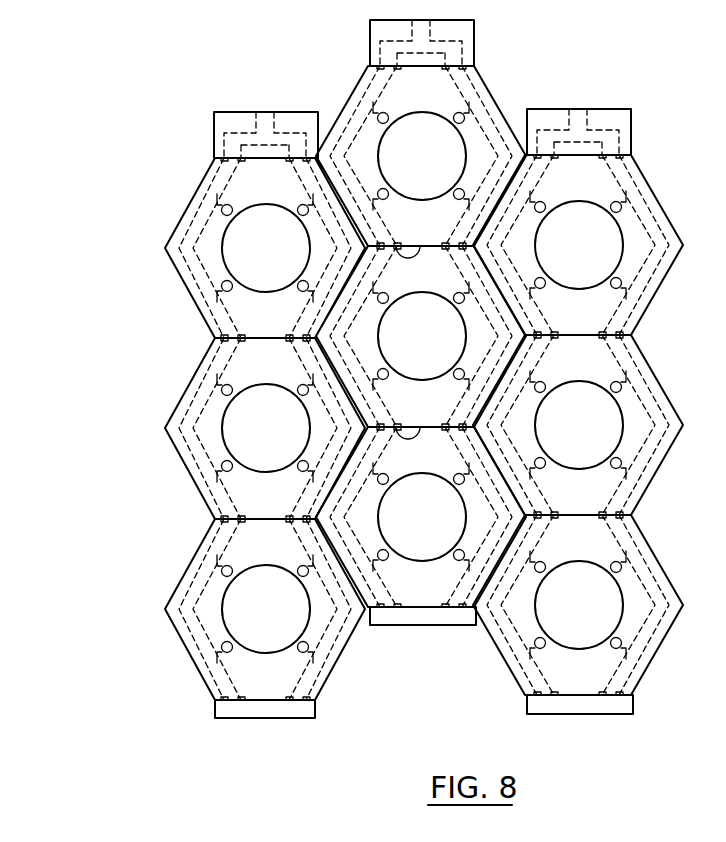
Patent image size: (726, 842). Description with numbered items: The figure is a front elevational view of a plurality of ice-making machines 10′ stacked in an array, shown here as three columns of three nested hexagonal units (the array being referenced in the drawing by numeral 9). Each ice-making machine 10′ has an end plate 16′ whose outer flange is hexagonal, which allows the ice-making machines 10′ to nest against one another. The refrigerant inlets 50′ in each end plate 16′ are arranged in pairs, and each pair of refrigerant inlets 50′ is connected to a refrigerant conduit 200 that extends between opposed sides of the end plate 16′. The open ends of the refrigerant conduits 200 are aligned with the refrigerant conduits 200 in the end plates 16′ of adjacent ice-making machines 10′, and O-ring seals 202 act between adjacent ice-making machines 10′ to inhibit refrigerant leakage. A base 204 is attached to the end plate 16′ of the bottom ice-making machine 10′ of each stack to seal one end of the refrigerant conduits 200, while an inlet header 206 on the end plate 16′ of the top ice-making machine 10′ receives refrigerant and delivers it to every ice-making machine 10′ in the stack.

The hexagonal panel 9 is at (198, 506).
The ice-making machine 10′ is at (488, 667).
The end plate 16′ is at (670, 350).
The refrigerant inlets 50′ is at (230, 280).
The refrigerant conduit 200 is at (192, 272).
The O-ring seal 202 is at (421, 241).
The base 204 is at (278, 708).
The inlet header 206 is at (370, 33).